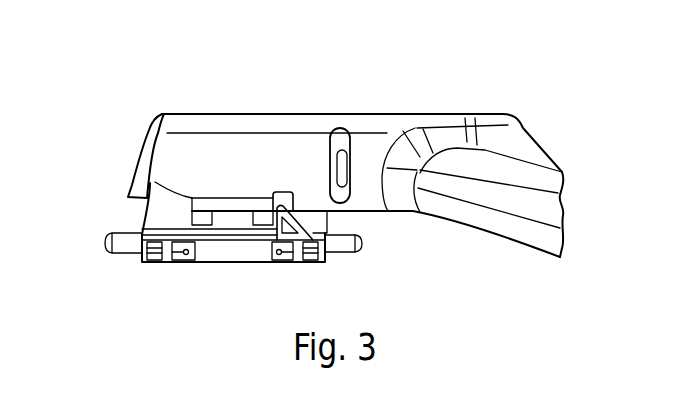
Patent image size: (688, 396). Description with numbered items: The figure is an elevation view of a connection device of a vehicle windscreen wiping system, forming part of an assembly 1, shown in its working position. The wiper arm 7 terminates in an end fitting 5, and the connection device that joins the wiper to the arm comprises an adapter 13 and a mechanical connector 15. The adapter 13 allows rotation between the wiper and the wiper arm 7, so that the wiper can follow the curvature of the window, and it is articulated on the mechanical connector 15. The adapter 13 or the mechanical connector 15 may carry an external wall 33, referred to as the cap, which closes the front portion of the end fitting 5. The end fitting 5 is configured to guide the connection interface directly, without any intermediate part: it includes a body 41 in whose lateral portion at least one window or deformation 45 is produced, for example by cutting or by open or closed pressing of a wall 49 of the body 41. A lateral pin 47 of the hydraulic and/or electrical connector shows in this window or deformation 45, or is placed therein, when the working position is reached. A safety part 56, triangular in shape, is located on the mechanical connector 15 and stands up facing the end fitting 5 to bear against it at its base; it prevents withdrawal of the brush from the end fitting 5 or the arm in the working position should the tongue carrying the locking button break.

The assembly 1 is at (402, 115).
The end fitting 5 is at (247, 115).
The wiper arm 7 is at (543, 178).
The adapter 13 is at (145, 158).
The mechanical connector 15 is at (163, 213).
The external wall 33 is at (149, 138).
The body 41 is at (293, 127).
The window or deformation 45 is at (350, 196).
The pin 47 is at (330, 170).
The wall 49 is at (238, 179).
The safety part 56 is at (277, 232).